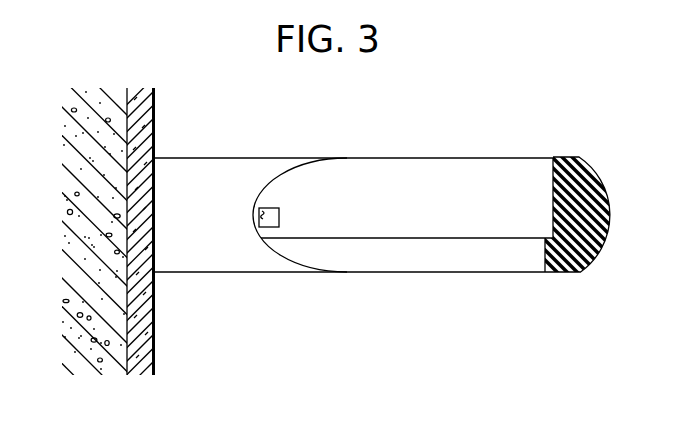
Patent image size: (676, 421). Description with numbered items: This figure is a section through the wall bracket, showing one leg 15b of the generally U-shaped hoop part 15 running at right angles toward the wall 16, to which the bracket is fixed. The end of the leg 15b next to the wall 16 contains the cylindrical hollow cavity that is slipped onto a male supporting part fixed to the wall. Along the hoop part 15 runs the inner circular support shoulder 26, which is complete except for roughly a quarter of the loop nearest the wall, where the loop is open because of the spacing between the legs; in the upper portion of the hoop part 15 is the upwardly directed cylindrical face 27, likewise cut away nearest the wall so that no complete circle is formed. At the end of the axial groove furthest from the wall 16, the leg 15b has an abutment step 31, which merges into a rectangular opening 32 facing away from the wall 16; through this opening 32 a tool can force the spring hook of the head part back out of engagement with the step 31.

The hoop part 15 is at (593, 164).
The leg 15b is at (190, 178).
The wall 16 is at (81, 199).
The inner circular support shoulder 26 is at (454, 236).
The upwardly directed cylindrical face 27 is at (551, 168).
The abutment step 31 is at (259, 215).
The rectangular opening 32 is at (279, 212).